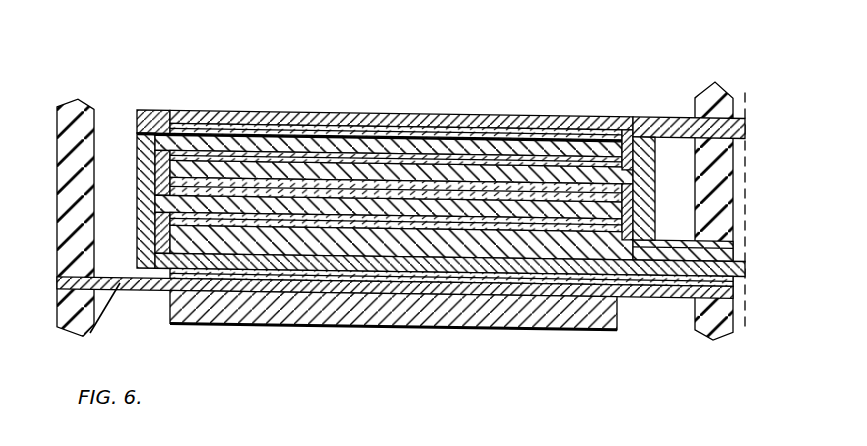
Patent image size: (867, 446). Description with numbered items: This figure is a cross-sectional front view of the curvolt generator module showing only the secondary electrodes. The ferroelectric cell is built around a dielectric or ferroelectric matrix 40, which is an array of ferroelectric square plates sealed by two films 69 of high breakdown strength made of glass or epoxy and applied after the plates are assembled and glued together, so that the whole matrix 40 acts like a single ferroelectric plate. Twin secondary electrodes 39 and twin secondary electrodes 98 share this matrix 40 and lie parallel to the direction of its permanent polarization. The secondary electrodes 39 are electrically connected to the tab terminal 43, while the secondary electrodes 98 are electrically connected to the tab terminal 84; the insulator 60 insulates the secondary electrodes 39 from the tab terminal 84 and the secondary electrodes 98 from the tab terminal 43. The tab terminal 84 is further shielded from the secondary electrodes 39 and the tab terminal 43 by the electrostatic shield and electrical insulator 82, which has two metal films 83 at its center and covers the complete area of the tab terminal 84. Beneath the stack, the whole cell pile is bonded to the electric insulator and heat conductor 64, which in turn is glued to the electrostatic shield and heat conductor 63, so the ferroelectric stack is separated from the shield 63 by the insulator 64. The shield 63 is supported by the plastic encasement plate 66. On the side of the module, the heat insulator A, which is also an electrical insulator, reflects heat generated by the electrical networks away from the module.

The insulator 60 is at (158, 110).
The films of high breakdown strength 69 is at (260, 125).
The ferroelectric matrix 40 is at (413, 127).
The secondary electrodes 39 is at (502, 233).
The secondary electrodes 98 is at (555, 205).
The tab terminal 43 is at (650, 123).
The heat insulator A is at (740, 153).
The plastic encasement plate 66 is at (77, 203).
The metal films 83 is at (667, 253).
The electrostatic shield and electrical insulator 82 is at (668, 256).
The tab terminal 84 is at (735, 275).
The electric insulator and heat conductor 64 is at (618, 302).
The electrostatic shield and heat conductor 63 is at (118, 282).